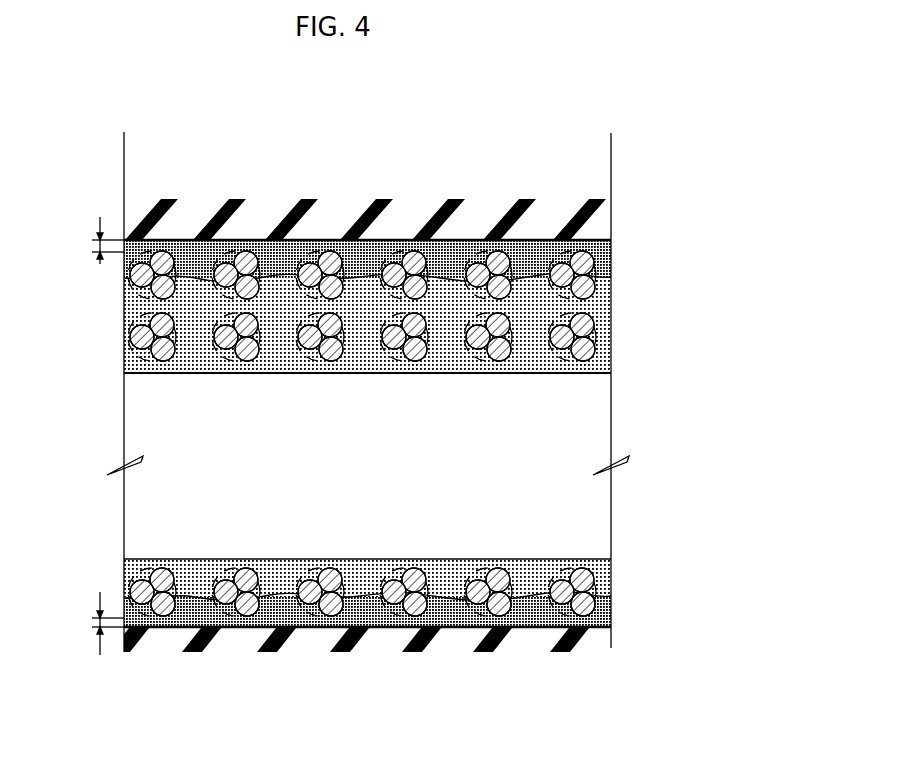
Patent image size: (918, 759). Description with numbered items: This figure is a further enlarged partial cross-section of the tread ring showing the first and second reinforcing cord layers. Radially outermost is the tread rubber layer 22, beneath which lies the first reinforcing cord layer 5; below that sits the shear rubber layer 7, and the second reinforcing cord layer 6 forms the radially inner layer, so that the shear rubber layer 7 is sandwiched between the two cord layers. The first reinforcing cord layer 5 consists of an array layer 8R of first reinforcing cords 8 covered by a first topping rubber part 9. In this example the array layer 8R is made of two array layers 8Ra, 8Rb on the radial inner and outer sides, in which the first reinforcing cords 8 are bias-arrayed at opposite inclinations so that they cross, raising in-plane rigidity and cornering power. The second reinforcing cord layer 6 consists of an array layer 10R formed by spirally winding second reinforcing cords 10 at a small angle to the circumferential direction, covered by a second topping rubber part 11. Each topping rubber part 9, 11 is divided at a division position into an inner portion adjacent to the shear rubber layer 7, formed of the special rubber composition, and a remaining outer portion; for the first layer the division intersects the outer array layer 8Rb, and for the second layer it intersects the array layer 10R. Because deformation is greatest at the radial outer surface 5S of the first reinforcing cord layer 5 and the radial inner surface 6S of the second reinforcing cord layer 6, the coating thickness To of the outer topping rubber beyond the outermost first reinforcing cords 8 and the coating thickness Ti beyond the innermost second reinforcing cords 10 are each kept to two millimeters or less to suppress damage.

The first reinforcing cord layer 5 is at (742, 113).
The radial direction outer surface of the first reinforcing cord layer 5S is at (178, 240).
The second reinforcing cord layer 6 is at (754, 565).
The radial direction inner surface of the second reinforcing cord layer 6S is at (175, 628).
The shear rubber layer 7 is at (532, 438).
The first reinforcing cords 8 is at (602, 342).
The array layer of first reinforcing cords 8R is at (685, 95).
The radial direction inner array layer 8Ra is at (425, 330).
The radial direction outer array layer 8Rb is at (430, 258).
The first topping rubber part 9 is at (704, 212).
The second reinforcing cords 10 is at (588, 583).
The array layer of second reinforcing cords 10R is at (512, 615).
The second topping rubber part 11 is at (710, 650).
The tread rubber layer 22 is at (368, 185).
The coating thickness To is at (92, 240).
The coating thickness Ti is at (95, 623).